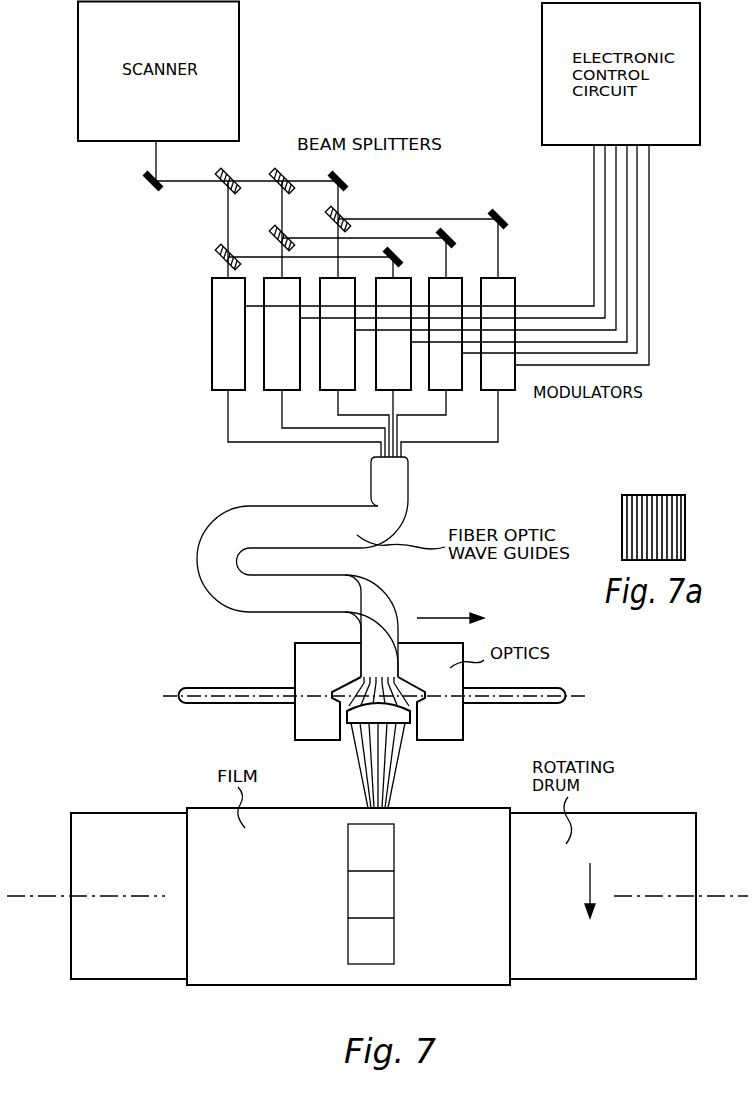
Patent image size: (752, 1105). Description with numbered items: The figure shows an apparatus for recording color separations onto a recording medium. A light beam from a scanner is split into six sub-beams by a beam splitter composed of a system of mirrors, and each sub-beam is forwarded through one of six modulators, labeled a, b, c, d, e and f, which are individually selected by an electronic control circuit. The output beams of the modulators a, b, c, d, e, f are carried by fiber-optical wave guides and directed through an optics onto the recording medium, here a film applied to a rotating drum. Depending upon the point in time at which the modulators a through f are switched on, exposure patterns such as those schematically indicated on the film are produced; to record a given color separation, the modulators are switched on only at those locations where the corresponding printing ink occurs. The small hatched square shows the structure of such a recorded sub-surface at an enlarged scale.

The modulator / beam channel a is at (326, 757).
The modulator / beam channel b is at (336, 775).
The modulator / beam channel c is at (348, 793).
The modulator / beam channel d is at (422, 757).
The modulator / beam channel e is at (412, 775).
The modulator / beam channel f is at (406, 792).